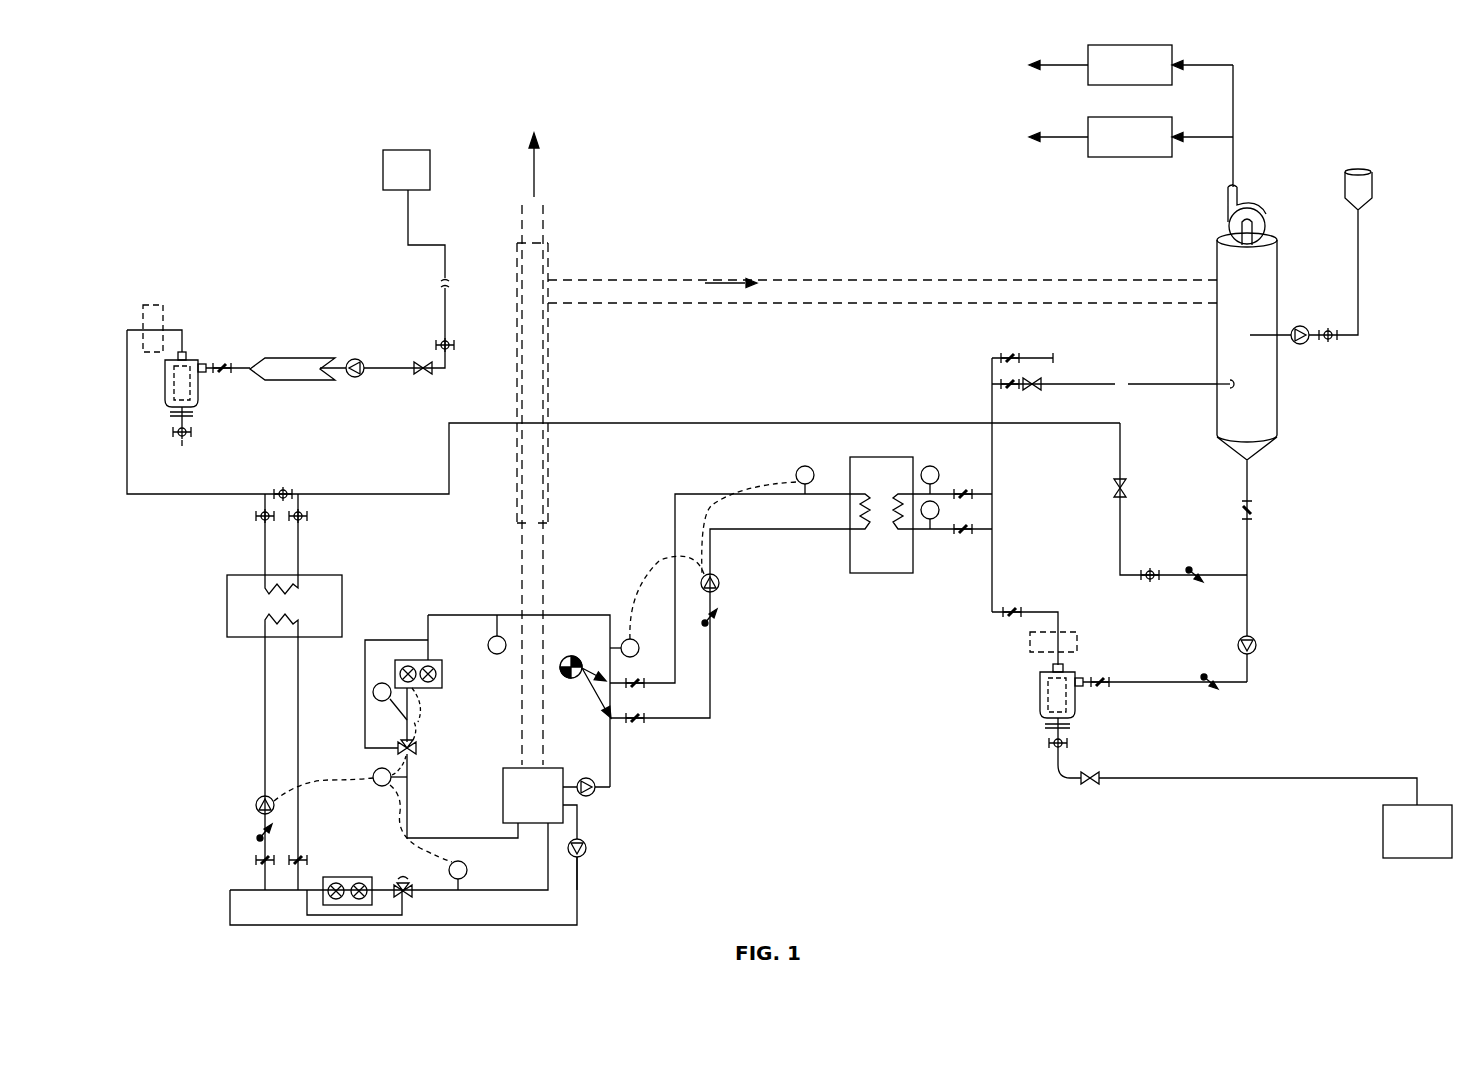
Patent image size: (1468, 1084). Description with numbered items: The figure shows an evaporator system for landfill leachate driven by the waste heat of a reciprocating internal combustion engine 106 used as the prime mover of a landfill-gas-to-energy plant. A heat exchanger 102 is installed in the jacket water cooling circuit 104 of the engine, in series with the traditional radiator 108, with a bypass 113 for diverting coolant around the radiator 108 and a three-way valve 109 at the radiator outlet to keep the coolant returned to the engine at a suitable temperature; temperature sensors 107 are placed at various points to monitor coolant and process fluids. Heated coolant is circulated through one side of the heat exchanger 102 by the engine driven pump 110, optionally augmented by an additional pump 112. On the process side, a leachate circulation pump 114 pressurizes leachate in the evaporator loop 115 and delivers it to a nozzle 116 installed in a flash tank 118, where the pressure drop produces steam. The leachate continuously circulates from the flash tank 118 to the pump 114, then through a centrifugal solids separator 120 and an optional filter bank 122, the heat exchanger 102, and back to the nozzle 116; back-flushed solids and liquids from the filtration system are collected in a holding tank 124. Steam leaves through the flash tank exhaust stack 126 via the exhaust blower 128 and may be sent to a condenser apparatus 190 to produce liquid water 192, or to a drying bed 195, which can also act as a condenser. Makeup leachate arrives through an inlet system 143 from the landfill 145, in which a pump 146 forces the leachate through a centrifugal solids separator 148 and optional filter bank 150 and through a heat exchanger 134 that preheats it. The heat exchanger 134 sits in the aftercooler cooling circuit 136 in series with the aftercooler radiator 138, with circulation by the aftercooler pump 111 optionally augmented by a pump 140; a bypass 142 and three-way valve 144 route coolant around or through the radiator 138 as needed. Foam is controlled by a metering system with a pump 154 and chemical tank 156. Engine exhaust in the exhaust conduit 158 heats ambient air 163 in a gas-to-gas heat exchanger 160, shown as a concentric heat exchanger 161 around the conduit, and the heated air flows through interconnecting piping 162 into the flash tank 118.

The heat exchanger 102 is at (852, 540).
The cooling circuit 104 is at (643, 768).
The reciprocating internal combustion engine 106 is at (503, 790).
The temperature sensors 107 is at (380, 683).
The radiator 108 is at (442, 686).
The three-way valve 109 is at (416, 745).
The engine driven pump 110 is at (595, 792).
The aftercooler pump 111 is at (585, 855).
The additional pump 112 is at (718, 592).
The bypass 113 is at (365, 700).
The leachate circulation pump 114 is at (1258, 640).
The evaporator loop 115 is at (972, 607).
The nozzle 116 is at (1262, 380).
The flash tank 118 is at (1215, 258).
The centrifugal solids separator 120 is at (1078, 705).
The filter bank 122 is at (1078, 640).
The holding tank 124 is at (1417, 831).
The flash tank exhaust stack 126 is at (1240, 185).
The exhaust blower 128 is at (1260, 203).
The heat exchanger 134 is at (227, 592).
The aftercooler cooling circuit 136 is at (230, 898).
The aftercooler radiator 138 is at (340, 877).
The pump 140 is at (257, 797).
The bypass 142 is at (300, 915).
The inlet system 143 is at (392, 285).
The three-way valve 144 is at (410, 898).
The landfill 145 is at (432, 176).
The pump 146 is at (356, 358).
The centrifugal solids separator 148 is at (200, 400).
The filter bank 150 is at (152, 305).
The pump 154 is at (1310, 342).
The chemical tank 156 is at (1372, 180).
The exhaust conduit 158 is at (545, 575).
The gas-to-gas heat exchanger 160 is at (563, 268).
The concentric heat exchanger 161 is at (517, 262).
The interconnecting piping 162 is at (625, 280).
The ambient air 163 is at (718, 295).
The condenser apparatus 190 is at (1130, 160).
The liquid water 192 is at (1054, 70).
The drying bed 195 is at (1130, 88).